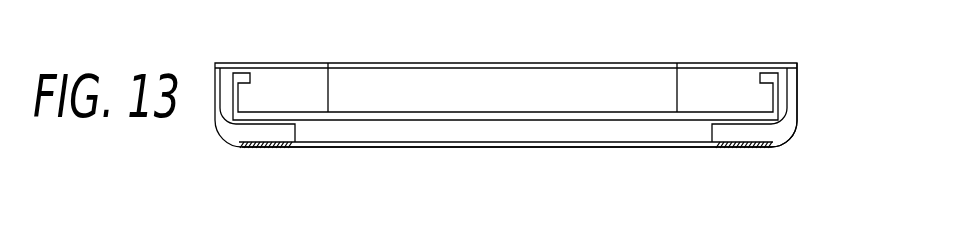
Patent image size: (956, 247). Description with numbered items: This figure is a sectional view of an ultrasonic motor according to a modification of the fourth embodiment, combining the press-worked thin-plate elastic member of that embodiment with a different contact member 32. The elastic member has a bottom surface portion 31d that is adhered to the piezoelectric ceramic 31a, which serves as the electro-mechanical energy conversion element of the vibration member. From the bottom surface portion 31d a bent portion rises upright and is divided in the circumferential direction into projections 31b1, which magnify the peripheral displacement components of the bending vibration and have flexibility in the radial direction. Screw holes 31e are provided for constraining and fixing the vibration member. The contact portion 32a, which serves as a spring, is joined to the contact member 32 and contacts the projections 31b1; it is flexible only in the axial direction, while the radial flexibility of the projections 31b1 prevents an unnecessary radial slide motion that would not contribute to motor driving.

The contact member 32 is at (680, 97).
The contact portion 32a is at (795, 76).
The projections 31b1 is at (797, 92).
The screw holes 31e is at (795, 127).
The bottom surface portion 31d is at (733, 134).
The piezoelectric ceramic 31a is at (747, 150).